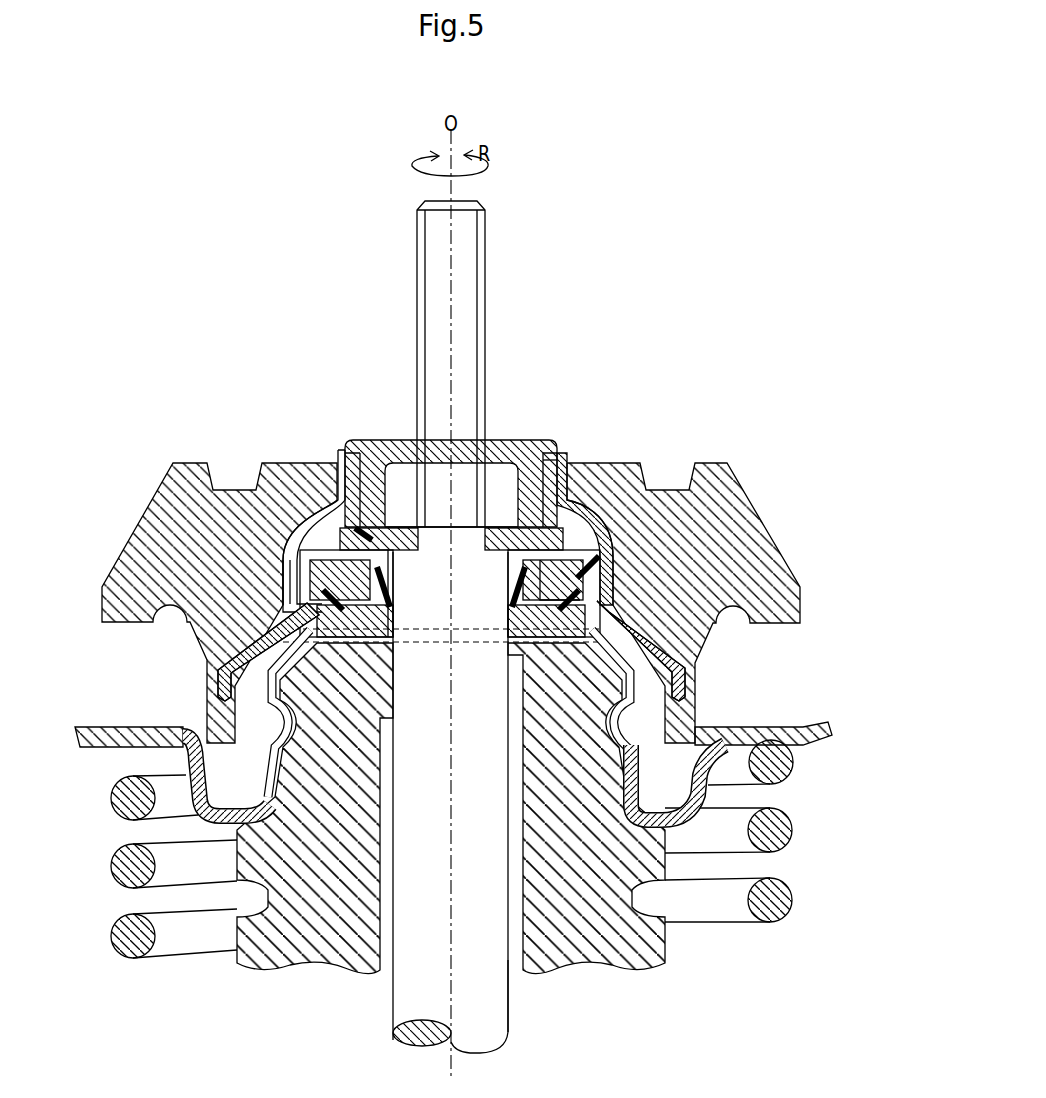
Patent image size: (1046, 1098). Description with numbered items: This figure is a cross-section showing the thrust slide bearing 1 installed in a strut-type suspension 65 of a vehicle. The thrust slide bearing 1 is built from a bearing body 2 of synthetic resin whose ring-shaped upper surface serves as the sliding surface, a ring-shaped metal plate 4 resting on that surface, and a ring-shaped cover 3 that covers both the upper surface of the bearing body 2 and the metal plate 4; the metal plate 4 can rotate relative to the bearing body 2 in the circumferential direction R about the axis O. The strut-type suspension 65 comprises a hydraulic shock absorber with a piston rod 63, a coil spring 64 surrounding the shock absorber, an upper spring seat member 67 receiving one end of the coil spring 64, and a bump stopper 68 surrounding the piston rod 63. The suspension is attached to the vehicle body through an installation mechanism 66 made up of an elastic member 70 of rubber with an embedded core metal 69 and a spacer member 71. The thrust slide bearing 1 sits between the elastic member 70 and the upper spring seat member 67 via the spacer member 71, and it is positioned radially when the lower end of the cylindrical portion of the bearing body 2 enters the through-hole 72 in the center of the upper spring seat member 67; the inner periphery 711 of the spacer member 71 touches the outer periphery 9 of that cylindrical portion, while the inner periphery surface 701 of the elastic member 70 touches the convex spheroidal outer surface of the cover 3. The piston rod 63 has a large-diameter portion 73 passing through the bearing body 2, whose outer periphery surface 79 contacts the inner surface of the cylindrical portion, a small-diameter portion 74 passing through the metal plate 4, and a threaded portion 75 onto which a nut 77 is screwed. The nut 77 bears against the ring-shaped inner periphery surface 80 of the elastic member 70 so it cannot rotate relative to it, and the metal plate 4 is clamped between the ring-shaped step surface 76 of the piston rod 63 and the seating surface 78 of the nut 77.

The thrust slide bearing 1 is at (322, 503).
The bearing body 2 is at (620, 617).
The ring-shaped cover 3 is at (337, 507).
The ring-shaped metal plate 4 is at (341, 458).
The outer periphery 9 is at (320, 598).
The piston rod 63 is at (508, 1000).
The coil spring 64 is at (190, 958).
The strut-type suspension 65 is at (756, 705).
The installation mechanism 66 is at (121, 474).
The upper spring seat member 67 is at (160, 723).
The bump stopper 68 is at (673, 958).
The core metal 69 is at (505, 555).
The elastic member 70 is at (727, 463).
The spacer member 71 is at (693, 660).
The through-hole 72 is at (435, 641).
The large-diameter portion 73 is at (508, 1035).
The small-diameter portion 74 is at (515, 545).
The threaded portion 75 is at (486, 252).
The ring-shaped step surface 76 is at (552, 480).
The nut 77 is at (355, 442).
The seating surface 78 is at (442, 527).
The outer periphery surface 79 is at (402, 998).
The ring-shaped inner periphery surface 80 is at (468, 545).
The inner periphery surface 701 is at (280, 603).
The inner periphery 711 is at (397, 610).